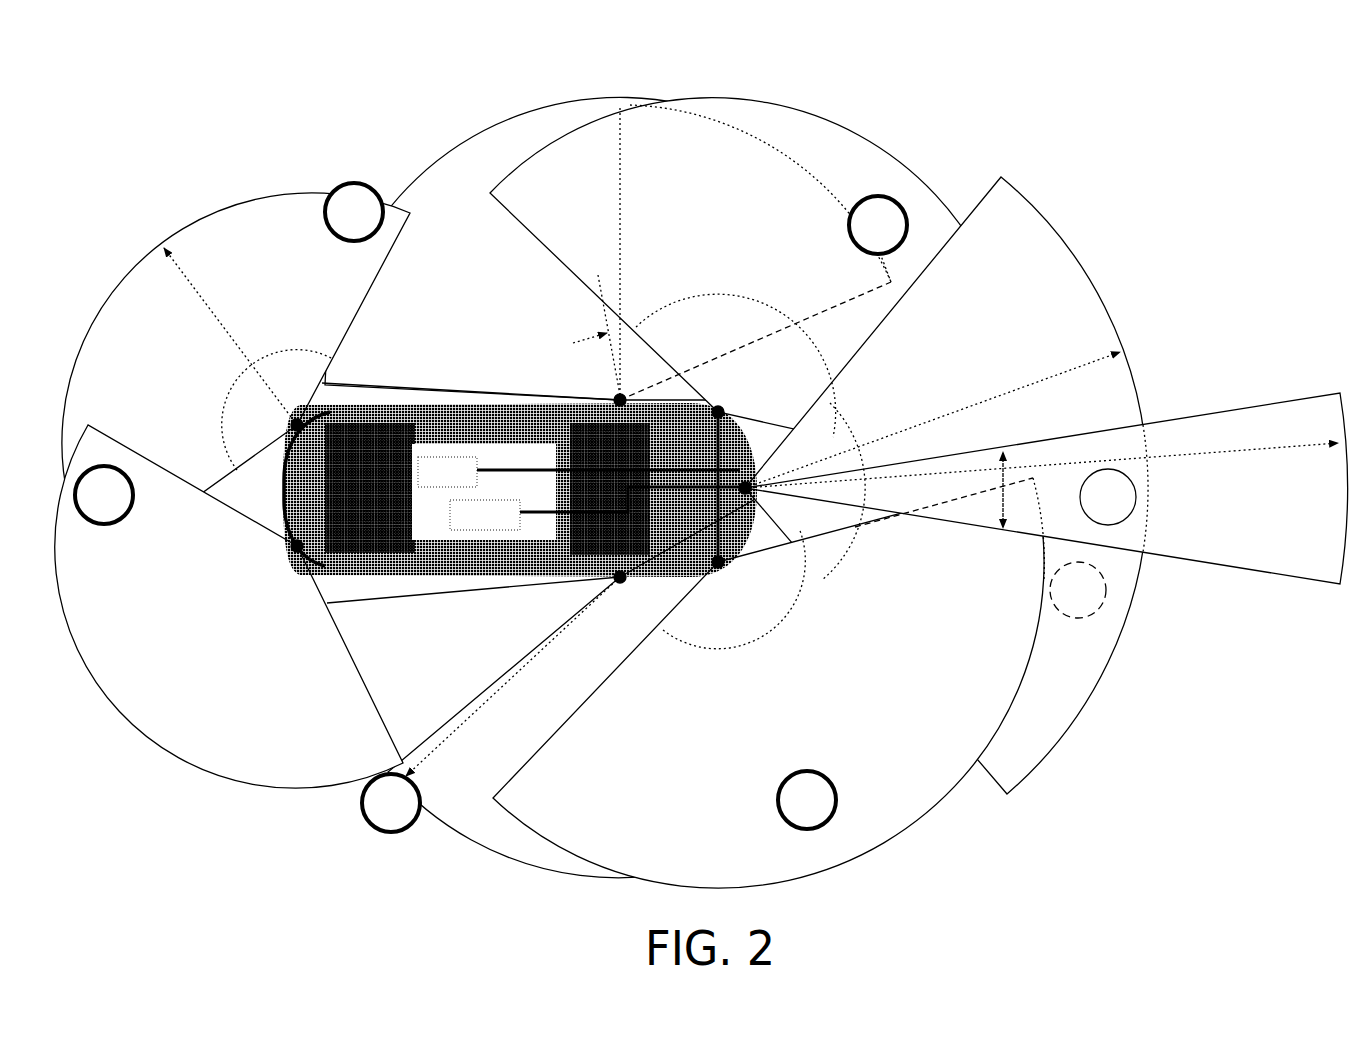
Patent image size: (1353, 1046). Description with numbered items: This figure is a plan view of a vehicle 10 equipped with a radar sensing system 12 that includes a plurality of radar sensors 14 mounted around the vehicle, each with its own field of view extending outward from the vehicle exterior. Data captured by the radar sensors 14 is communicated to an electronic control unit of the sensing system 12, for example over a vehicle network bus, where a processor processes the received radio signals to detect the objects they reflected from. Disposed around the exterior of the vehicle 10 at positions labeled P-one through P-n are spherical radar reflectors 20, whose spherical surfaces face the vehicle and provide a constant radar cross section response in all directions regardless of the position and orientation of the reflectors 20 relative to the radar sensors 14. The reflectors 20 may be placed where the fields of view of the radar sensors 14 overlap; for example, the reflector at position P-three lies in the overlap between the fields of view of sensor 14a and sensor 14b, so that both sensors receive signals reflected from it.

The vehicle 10 is at (1115, 82).
The sensing system 12 is at (900, 93).
The radar sensor 14 is at (620, 400).
The sensor 14a is at (297, 425).
The sensor 14b is at (297, 546).
The spherical radar reflector 20 is at (333, 192).